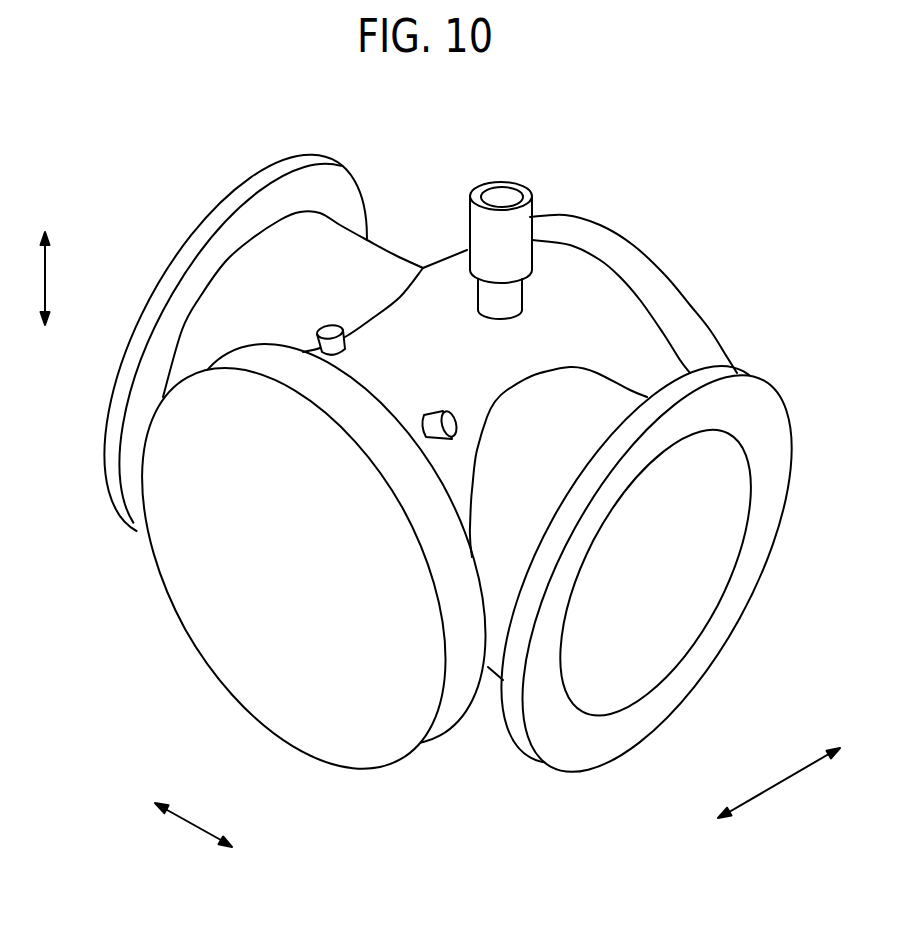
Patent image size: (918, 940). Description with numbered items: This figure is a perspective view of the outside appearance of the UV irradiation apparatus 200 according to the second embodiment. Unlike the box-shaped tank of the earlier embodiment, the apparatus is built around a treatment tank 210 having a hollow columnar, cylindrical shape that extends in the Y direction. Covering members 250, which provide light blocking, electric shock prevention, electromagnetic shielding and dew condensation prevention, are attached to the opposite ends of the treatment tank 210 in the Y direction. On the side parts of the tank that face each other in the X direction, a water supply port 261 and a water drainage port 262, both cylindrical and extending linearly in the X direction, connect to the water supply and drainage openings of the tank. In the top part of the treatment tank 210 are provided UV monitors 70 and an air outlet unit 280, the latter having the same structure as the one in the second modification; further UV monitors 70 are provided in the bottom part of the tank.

The UV irradiation apparatus 200 is at (206, 152).
The treatment tank 210 is at (549, 266).
The covering members 250 is at (657, 300).
The water supply port 261 is at (313, 257).
The water drainage port 262 is at (605, 395).
The air outlet unit 280 is at (504, 184).
The UV monitors 70 is at (331, 326).